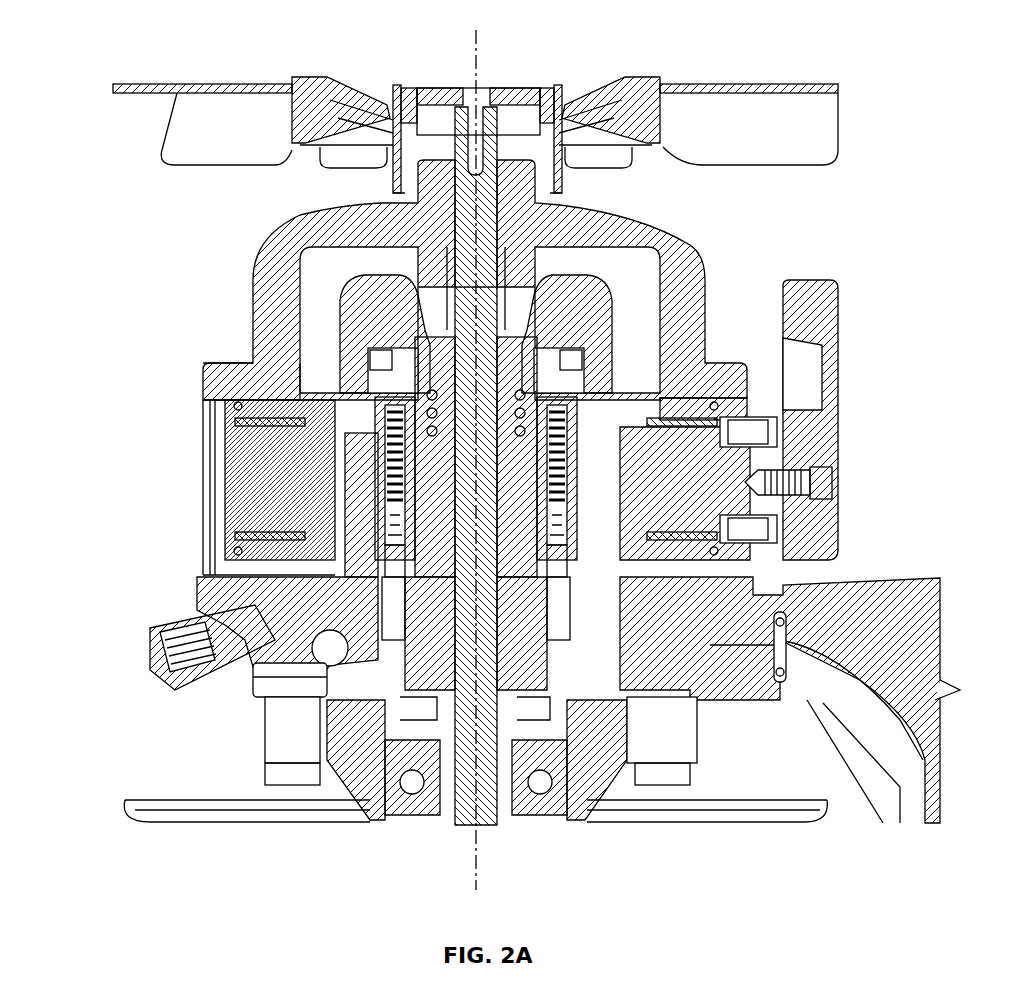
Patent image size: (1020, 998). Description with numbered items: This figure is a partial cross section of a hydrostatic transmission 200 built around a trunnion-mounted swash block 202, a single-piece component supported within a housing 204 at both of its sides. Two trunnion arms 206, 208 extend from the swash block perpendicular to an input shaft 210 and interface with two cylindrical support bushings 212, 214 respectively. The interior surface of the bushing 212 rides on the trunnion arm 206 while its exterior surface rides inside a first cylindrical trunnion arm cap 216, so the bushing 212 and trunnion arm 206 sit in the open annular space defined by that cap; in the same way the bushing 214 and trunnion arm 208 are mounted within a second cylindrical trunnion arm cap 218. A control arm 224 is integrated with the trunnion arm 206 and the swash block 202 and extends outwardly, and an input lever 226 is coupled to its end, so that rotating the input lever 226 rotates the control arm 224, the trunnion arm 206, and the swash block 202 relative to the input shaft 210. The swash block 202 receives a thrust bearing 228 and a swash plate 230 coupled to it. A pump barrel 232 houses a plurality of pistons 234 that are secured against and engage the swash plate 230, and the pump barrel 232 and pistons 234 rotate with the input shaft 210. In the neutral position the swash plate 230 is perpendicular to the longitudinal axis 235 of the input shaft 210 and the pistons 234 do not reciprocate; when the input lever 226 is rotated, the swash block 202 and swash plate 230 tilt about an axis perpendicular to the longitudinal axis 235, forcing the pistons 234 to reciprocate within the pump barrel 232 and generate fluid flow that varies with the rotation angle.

The hydrostatic transmission 200 is at (130, 160).
The trunnion-mounted swash block 202 is at (362, 312).
The housing 204 is at (685, 262).
The trunnion arm 206 is at (750, 432).
The trunnion arm 208 is at (245, 452).
The input shaft 210 is at (478, 240).
The cylindrical support bushing 212 is at (680, 415).
The cylindrical support bushing 214 is at (240, 424).
The first cylindrical trunnion arm cap 216 is at (660, 395).
The second cylindrical trunnion arm cap 218 is at (283, 405).
The control arm 224 is at (735, 452).
The input lever 226 is at (818, 302).
The thrust bearing 228 is at (540, 350).
The swash plate 230 is at (582, 395).
The pump barrel 232 is at (355, 522).
The piston 234 is at (377, 480).
The longitudinal axis 235 is at (476, 33).